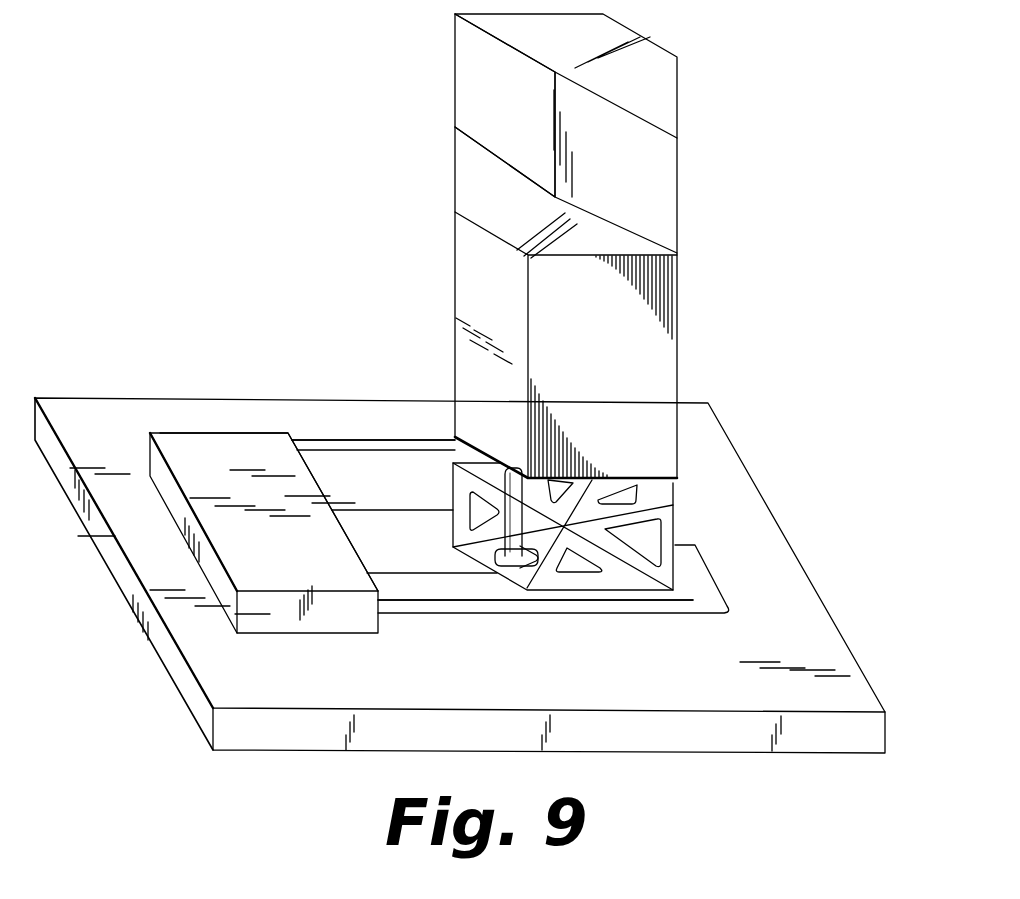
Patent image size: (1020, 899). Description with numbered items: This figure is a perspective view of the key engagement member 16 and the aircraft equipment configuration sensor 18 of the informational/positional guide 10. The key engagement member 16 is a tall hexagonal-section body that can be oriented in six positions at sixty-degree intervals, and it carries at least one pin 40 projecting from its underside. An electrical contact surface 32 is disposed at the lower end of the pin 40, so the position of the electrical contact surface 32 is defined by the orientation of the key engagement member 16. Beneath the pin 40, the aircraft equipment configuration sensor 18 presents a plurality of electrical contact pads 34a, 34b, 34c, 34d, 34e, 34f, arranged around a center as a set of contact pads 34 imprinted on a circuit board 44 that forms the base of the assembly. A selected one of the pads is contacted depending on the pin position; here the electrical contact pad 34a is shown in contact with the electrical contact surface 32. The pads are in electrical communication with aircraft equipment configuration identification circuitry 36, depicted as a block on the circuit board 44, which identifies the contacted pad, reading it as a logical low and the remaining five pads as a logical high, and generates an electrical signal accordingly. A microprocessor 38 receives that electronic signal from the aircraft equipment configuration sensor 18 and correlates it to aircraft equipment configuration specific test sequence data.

The tool holder / turret tower 10 is at (677, 57).
The key engagement member 16 is at (502, 93).
The aircraft equipment configuration sensor 18 is at (283, 333).
The electrical contact surface 32 is at (520, 563).
The electrical contact pads 34 is at (592, 518).
The electrical contact pad 34a is at (520, 567).
The electrical contact pad 34b is at (575, 563).
The electrical contact pad 34c is at (640, 542).
The electrical contact pad 34d is at (665, 480).
The electrical contact pad 34e is at (558, 490).
The electrical contact pad 34f is at (480, 508).
The aircraft equipment configuration identification circuitry 36 is at (270, 452).
The microprocessor 38 is at (198, 452).
The pin 40 is at (512, 478).
The circuit board 44 is at (778, 560).